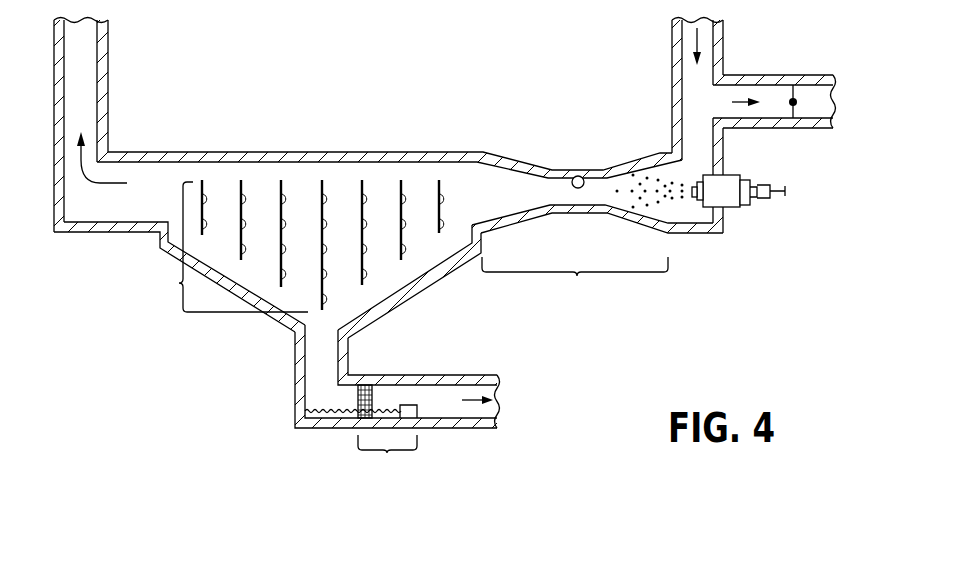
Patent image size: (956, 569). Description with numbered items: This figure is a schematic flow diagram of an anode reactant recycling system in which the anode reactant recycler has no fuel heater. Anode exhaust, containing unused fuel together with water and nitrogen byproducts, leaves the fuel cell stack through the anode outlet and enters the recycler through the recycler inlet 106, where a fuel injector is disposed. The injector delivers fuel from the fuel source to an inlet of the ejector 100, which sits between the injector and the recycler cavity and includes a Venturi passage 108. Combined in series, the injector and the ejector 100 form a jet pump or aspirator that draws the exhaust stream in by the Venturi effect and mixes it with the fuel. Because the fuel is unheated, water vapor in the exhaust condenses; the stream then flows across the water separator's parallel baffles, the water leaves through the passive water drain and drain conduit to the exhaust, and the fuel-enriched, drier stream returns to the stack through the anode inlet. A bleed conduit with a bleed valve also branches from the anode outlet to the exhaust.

The ejector 100 is at (597, 254).
The Venturi passage 108 is at (578, 176).
The recycler inlet 106 is at (725, 148).